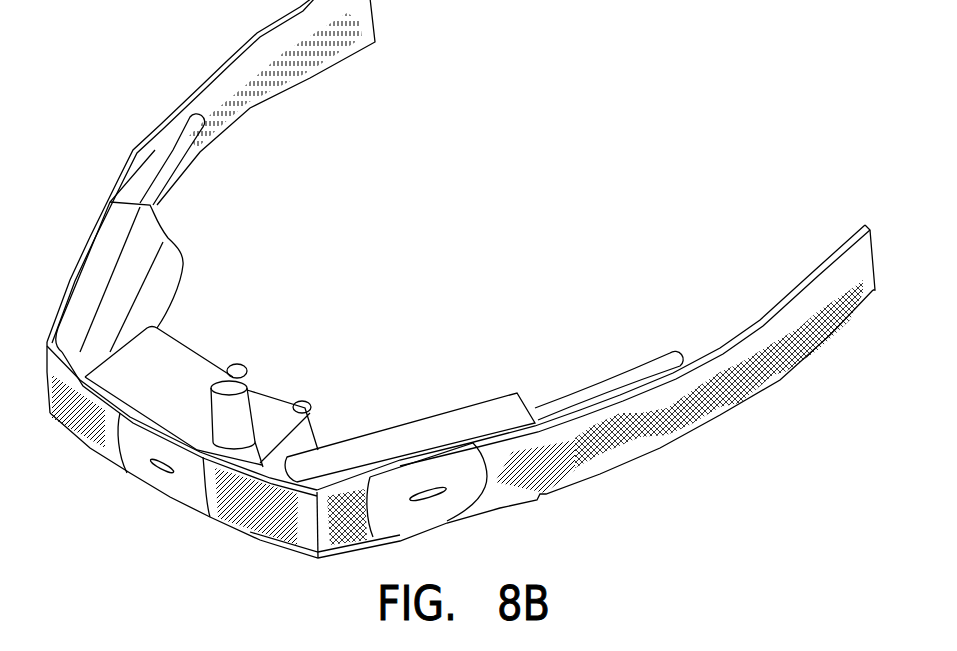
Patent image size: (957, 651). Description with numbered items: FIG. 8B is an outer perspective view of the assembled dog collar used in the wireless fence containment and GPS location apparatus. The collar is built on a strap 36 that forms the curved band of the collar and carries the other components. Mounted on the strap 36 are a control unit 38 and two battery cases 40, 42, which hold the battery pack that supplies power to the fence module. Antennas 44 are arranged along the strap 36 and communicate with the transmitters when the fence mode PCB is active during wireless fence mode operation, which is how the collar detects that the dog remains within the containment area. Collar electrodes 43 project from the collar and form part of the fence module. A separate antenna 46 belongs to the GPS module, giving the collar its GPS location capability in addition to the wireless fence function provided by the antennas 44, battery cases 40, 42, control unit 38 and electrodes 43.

The strap 36 is at (803, 308).
The control unit 38 is at (172, 362).
The battery case 40 is at (174, 247).
The battery case 42 is at (447, 412).
The collar electrodes 43 is at (232, 360).
The antennas 44 is at (173, 143).
The antenna 46 is at (257, 395).